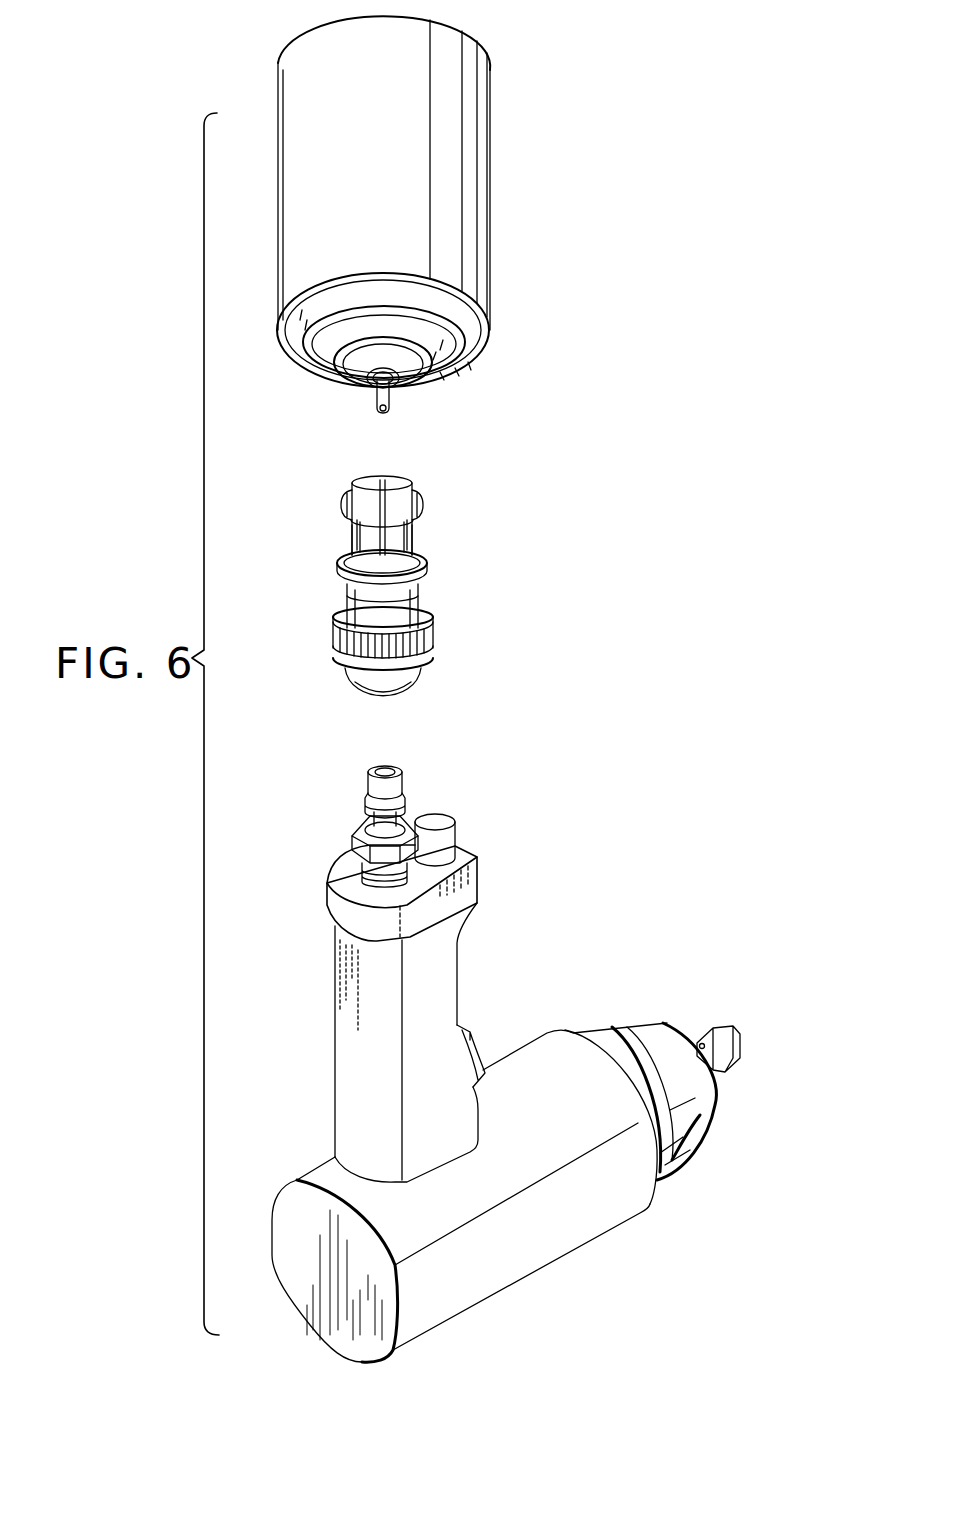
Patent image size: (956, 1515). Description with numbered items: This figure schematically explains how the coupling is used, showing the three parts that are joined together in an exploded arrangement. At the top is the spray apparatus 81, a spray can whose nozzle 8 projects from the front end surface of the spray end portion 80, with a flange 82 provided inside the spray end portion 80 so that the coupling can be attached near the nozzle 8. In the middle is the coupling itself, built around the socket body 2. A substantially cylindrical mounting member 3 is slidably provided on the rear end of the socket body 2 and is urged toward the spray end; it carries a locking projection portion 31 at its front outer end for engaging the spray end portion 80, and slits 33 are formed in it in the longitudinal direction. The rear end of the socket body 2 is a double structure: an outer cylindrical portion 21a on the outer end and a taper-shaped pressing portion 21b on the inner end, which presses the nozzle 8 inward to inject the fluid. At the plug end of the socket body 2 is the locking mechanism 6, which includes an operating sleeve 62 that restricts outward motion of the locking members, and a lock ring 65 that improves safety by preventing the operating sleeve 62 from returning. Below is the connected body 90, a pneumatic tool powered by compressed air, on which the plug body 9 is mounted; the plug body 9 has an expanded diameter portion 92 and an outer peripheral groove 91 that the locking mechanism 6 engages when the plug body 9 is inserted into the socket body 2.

The spray apparatus 81 is at (491, 221).
The spray end portion 80 is at (427, 394).
The flange 82 is at (357, 397).
The nozzle 8 is at (388, 402).
The slits 33 is at (360, 480).
The outer cylindrical portion 21a is at (401, 505).
The locking projection portion 31 is at (348, 531).
The taper-shaped pressing portion 21b is at (417, 534).
The mounting member 3 is at (433, 562).
The socket body 2 is at (430, 602).
The lock ring 65 is at (343, 633).
The operating sleeve 62 is at (437, 648).
The locking mechanism 6 is at (327, 655).
The expanded diameter portion 92 is at (372, 800).
The plug body 9 is at (392, 793).
The outer peripheral groove 91 is at (370, 828).
The connected body 90 is at (506, 1061).